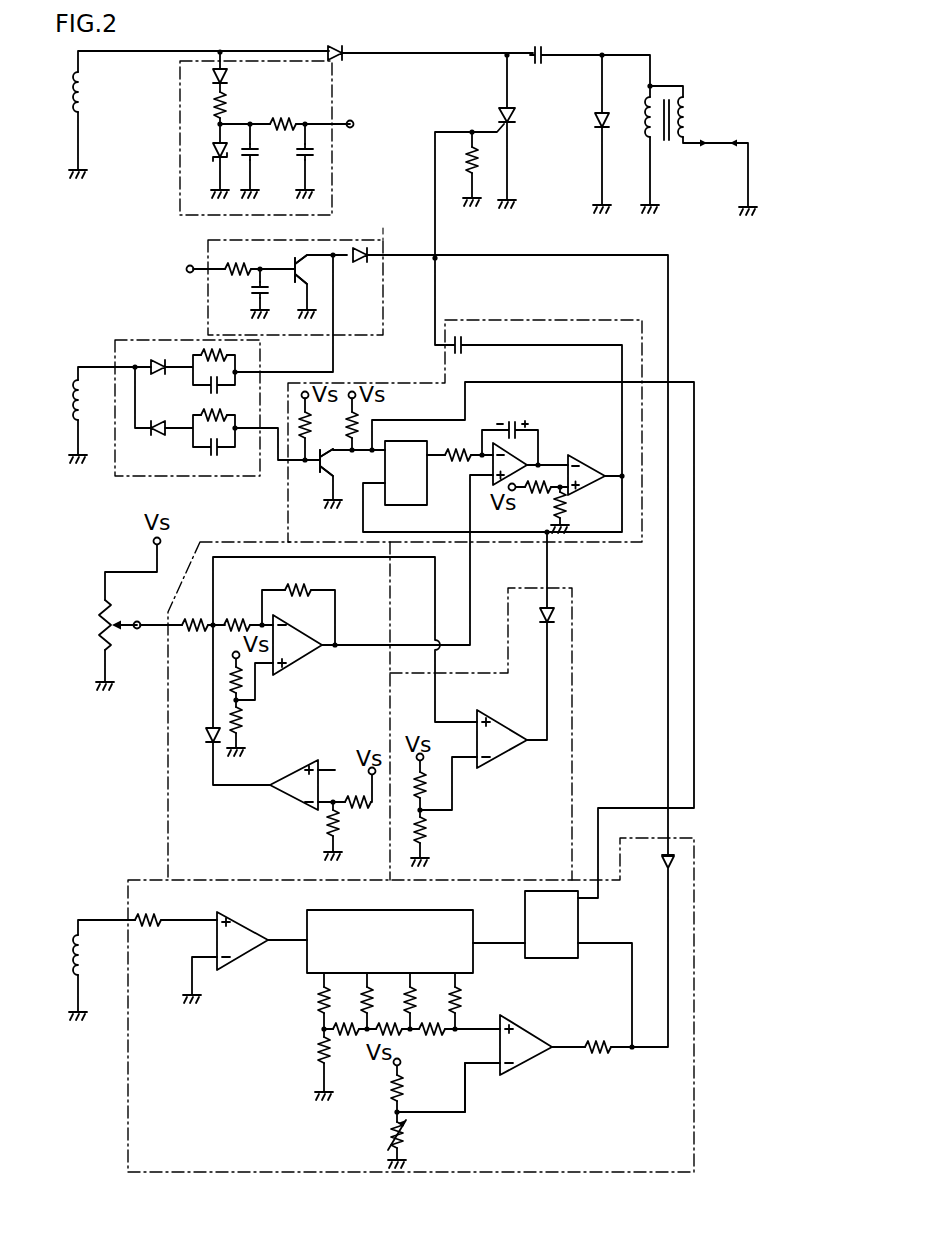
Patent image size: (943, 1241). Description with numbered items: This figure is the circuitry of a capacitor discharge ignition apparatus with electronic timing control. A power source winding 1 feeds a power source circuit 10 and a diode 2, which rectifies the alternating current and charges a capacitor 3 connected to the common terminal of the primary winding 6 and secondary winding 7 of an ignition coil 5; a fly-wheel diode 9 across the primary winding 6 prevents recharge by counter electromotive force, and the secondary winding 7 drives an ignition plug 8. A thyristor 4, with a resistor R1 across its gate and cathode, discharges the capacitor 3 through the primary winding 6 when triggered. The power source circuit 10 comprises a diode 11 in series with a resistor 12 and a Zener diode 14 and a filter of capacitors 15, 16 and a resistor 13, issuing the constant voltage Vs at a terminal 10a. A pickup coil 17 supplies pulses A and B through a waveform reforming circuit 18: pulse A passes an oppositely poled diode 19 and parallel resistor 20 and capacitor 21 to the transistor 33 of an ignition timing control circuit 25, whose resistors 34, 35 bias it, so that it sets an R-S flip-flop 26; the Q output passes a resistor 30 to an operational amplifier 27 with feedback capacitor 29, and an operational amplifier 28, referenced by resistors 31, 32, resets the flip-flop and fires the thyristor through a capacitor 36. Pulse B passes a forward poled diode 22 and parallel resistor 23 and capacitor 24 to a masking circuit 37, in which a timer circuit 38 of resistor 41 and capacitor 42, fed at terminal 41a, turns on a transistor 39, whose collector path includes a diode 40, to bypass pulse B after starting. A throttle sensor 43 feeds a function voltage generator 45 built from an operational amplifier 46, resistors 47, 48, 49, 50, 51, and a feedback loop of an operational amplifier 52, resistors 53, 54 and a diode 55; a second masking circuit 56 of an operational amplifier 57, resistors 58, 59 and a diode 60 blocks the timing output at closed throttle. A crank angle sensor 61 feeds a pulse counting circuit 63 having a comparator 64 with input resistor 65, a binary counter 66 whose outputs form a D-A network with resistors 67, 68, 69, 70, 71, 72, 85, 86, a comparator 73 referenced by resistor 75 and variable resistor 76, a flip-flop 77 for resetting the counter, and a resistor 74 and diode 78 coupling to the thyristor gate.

The power source winding 1 is at (73, 104).
The diode 2 is at (333, 46).
The capacitor 3 is at (536, 50).
The thyristor 4 is at (513, 118).
The ignition coil 5 is at (667, 141).
The primary winding 6 is at (647, 126).
The secondary winding 7 is at (689, 115).
The ignition plug 8 is at (728, 148).
The fly-wheel diode 9 is at (600, 130).
The resistor R1 is at (469, 164).
The power source circuit 10 is at (179, 150).
The terminal 10a is at (350, 120).
The diode 11 is at (213, 76).
The resistor 12 is at (213, 106).
The resistor 13 is at (283, 118).
The Zener diode 14 is at (213, 152).
The capacitor 15 is at (256, 152).
The capacitor 16 is at (312, 152).
The pickup coil 17 is at (72, 400).
The waveform reforming circuit 18 is at (116, 478).
The oppositely poled diode 19 is at (158, 435).
The resistor 20 is at (210, 452).
The capacitor 21 is at (225, 452).
The forward poled diode 22 is at (158, 360).
The resistor 23 is at (210, 350).
The capacitor 24 is at (210, 388).
The ignition timing control circuit 25 is at (560, 322).
The R-S flip-flop circuit 26 is at (430, 441).
The operational amplifier 27 is at (521, 452).
The operational amplifier 28 is at (589, 456).
The capacitor 29 is at (512, 424).
The resistor 30 is at (458, 461).
The resistor 31 is at (515, 495).
The resistor 32 is at (565, 505).
The transistor 33 is at (320, 472).
The resistor 34 is at (309, 425).
The resistor 35 is at (356, 425).
The capacitor 36 is at (461, 338).
The masking circuit 37 is at (381, 219).
The timer circuit 38 is at (208, 246).
The transistor 39 is at (301, 290).
The diode 40 is at (360, 263).
The resistor 41 is at (238, 264).
The terminal 41a is at (160, 270).
The capacitor 42 is at (256, 290).
The throttle sensor 43 is at (98, 625).
The function voltage generator 45 is at (168, 740).
The operational amplifier 46 is at (326, 640).
The resistor 47 is at (240, 680).
The resistor 48 is at (240, 720).
The resistor 49 is at (310, 588).
The resistor 50 is at (238, 620).
The resistor 51 is at (194, 630).
The operational amplifier 52 is at (283, 795).
The resistor 53 is at (358, 808).
The resistor 54 is at (330, 826).
The diode 55 is at (210, 742).
The second masking circuit 56 is at (572, 740).
The operational amplifier 57 is at (512, 752).
The resistor 58 is at (425, 788).
The resistor 59 is at (425, 836).
The diode 60 is at (553, 612).
The crank angle sensor 61 is at (72, 955).
The pulse counting circuit 63 is at (128, 1098).
The waveform reforming comparator 64 is at (248, 962).
The resistor 65 is at (151, 915).
The 4-bit binary counter 66 is at (400, 910).
The resistor 67 is at (321, 1003).
The resistor 68 is at (362, 1000).
The resistor 69 is at (425, 992).
The resistor 70 is at (320, 1050).
The resistor 71 is at (347, 1033).
The resistor 72 is at (392, 1033).
The comparator 73 is at (530, 1030).
The resistor 74 is at (598, 1052).
The resistor 75 is at (393, 1090).
The variable resistor 76 is at (388, 1140).
The flip-flop 77 is at (580, 924).
The diode 78 is at (676, 865).
The resistor 85 is at (460, 1000).
The resistor 86 is at (463, 1085).